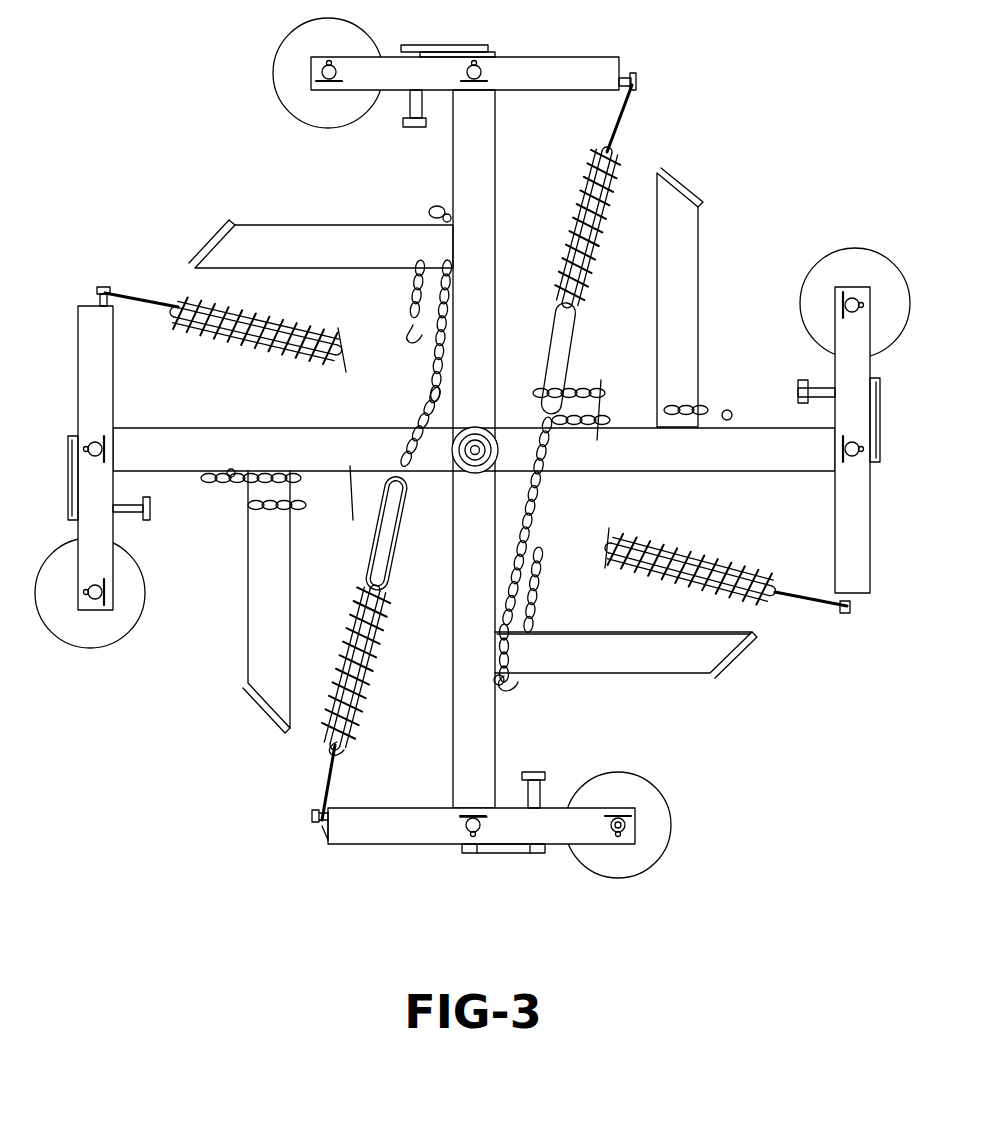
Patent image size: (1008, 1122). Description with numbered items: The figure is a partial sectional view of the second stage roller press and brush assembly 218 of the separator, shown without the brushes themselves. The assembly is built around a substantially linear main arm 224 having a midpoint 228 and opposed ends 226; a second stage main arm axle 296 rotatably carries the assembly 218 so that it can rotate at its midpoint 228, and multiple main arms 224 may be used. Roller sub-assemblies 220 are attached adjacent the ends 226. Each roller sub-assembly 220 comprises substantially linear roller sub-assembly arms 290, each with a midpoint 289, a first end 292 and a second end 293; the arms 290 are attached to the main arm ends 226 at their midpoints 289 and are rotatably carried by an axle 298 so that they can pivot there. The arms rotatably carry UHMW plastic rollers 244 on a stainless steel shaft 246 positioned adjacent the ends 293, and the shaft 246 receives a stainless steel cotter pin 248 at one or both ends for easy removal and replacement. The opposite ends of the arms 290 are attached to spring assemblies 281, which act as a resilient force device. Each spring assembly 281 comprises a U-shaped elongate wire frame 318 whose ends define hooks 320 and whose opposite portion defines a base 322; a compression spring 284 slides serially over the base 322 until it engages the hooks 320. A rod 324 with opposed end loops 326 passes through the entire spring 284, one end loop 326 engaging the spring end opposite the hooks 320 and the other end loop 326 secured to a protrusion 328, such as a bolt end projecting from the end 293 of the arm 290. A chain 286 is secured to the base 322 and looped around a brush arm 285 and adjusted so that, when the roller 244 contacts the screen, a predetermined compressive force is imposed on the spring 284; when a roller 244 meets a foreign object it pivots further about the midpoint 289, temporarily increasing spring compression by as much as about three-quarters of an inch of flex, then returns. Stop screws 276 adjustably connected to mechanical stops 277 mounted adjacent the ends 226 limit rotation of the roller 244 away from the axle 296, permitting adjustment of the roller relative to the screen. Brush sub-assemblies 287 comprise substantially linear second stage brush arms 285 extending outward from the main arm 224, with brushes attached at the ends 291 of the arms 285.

The second stage roller press and brush assembly 218 is at (283, 938).
The roller sub-assembly 220 is at (393, 826).
The main arm 224 is at (472, 575).
The opposed ends 226 is at (455, 845).
The midpoint 228 is at (493, 423).
The rollers 244 is at (665, 835).
The stainless steel shaft 246 is at (618, 820).
The cotter pin 248 is at (618, 818).
The stop screw 276 is at (532, 772).
The mechanical stop 277 is at (483, 853).
The spring assembly 281 is at (365, 573).
The compression spring 284 is at (385, 640).
The second stage brush arm 285 is at (650, 673).
The chain 286 is at (413, 350).
The brush sub-assembly 287 is at (687, 640).
The midpoint 289 is at (465, 825).
The roller sub-assembly arm 290 is at (365, 834).
The ends of brush arms 291 is at (740, 655).
The first end 292 is at (660, 825).
The second end 293 is at (322, 830).
The second stage main arm axle 296 is at (417, 400).
The axle 298 is at (480, 825).
The elongate wire frame 318 is at (365, 555).
The hooks 320 is at (315, 738).
The base 322 is at (385, 478).
The rod 324 is at (327, 777).
The end loops 326 is at (328, 826).
The protrusion 328 is at (310, 820).